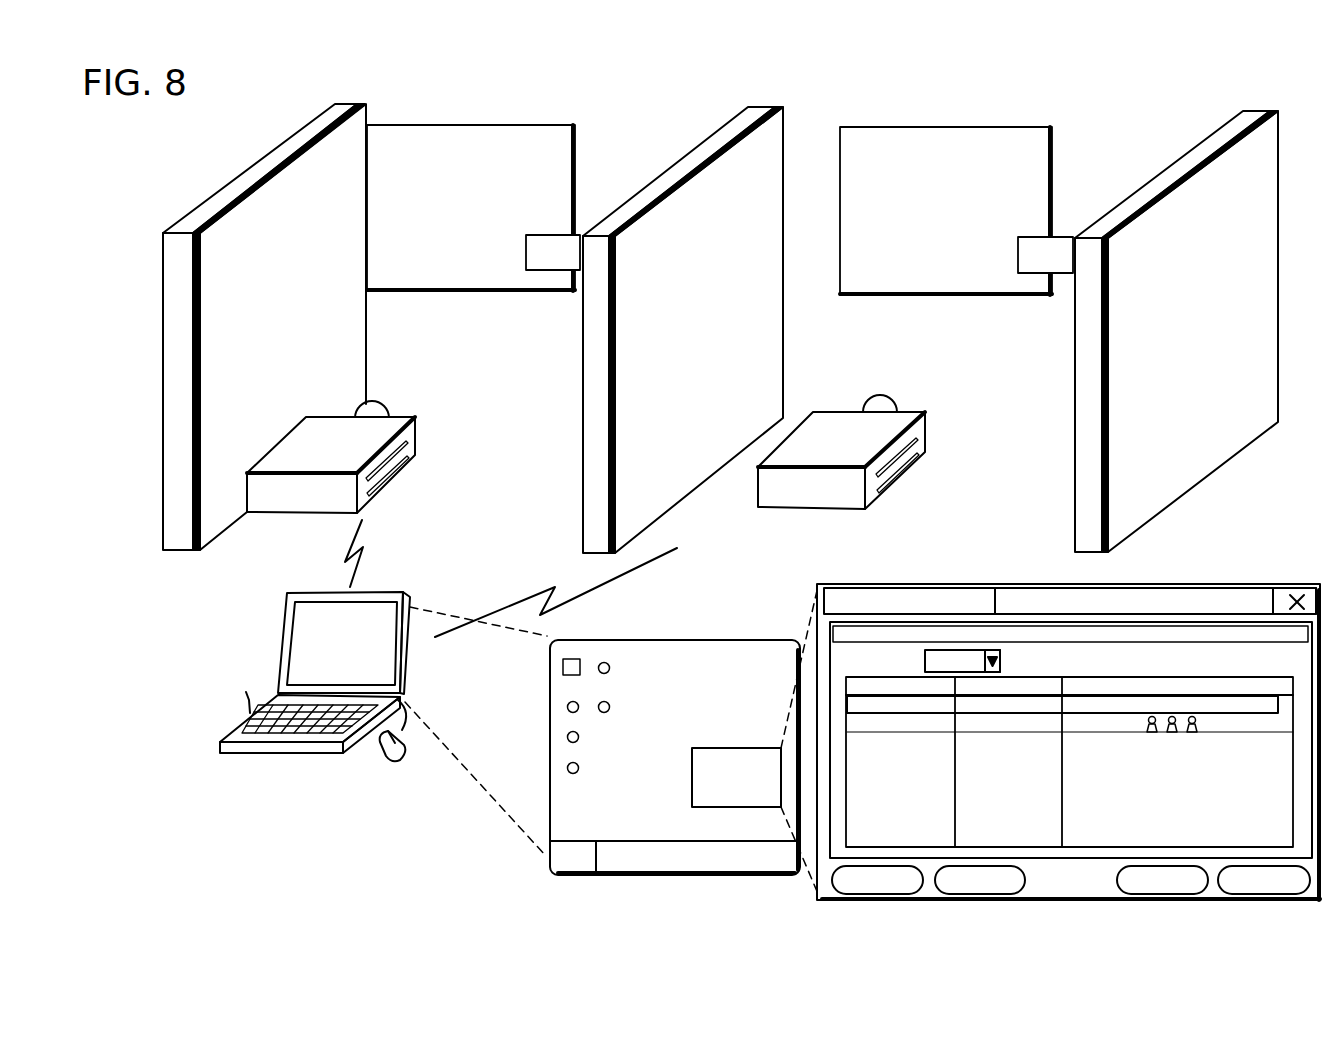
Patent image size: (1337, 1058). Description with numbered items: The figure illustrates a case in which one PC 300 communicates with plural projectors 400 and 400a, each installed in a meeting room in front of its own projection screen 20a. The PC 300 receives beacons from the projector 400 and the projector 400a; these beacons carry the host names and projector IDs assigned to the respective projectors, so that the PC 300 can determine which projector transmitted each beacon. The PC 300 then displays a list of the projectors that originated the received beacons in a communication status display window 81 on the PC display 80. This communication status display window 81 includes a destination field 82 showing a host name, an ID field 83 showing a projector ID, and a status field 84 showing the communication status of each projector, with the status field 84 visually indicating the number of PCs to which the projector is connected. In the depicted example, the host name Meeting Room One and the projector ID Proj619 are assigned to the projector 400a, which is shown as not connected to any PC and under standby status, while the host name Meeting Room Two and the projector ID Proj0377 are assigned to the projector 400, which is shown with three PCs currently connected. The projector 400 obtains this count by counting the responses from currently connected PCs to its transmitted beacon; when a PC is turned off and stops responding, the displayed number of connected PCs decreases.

The projection screen 20a is at (538, 125).
The projector 400 is at (413, 462).
The projector 400a is at (922, 457).
The PC 300 is at (285, 612).
The PC display 80 is at (645, 640).
The communication status display window 81 is at (710, 750).
The destination field 82 is at (847, 678).
The ID field 83 is at (1085, 668).
The status field 84 is at (1173, 675).